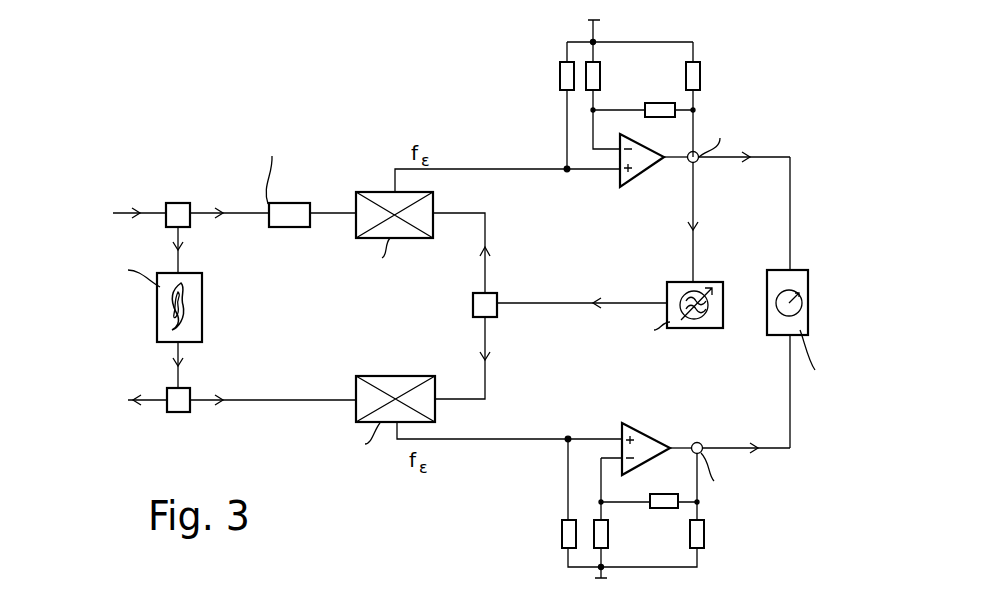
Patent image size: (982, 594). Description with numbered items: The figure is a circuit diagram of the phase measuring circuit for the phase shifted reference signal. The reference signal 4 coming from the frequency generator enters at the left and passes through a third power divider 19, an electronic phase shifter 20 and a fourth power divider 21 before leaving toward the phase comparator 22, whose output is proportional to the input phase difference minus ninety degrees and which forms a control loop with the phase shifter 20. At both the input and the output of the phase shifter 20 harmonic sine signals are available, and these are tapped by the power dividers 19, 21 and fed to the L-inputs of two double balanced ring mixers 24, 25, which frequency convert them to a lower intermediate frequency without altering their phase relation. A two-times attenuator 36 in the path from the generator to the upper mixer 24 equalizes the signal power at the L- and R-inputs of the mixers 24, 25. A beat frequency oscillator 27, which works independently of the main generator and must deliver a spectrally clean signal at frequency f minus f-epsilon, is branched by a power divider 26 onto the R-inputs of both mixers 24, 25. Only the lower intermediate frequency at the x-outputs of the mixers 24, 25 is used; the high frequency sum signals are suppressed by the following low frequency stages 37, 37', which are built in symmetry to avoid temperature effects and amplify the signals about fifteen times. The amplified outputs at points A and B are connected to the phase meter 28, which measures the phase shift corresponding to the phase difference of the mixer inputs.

The input signal 4 is at (130, 214).
The third power divider 19 is at (178, 210).
The 2x-attenuator 36 is at (283, 207).
The electronic phase shifter 20 is at (190, 320).
The fourth power divider 21 is at (177, 412).
The phase comparator 22 is at (132, 403).
The double balanced ring mixer 24 is at (402, 230).
The double balanced ring mixer 25 is at (378, 378).
The power divider 26 is at (474, 310).
The beat frequency oscillator 27 is at (690, 325).
The phase meter 28 is at (778, 333).
The low frequency stage 37 is at (675, 151).
The low frequency stage 37' is at (676, 483).